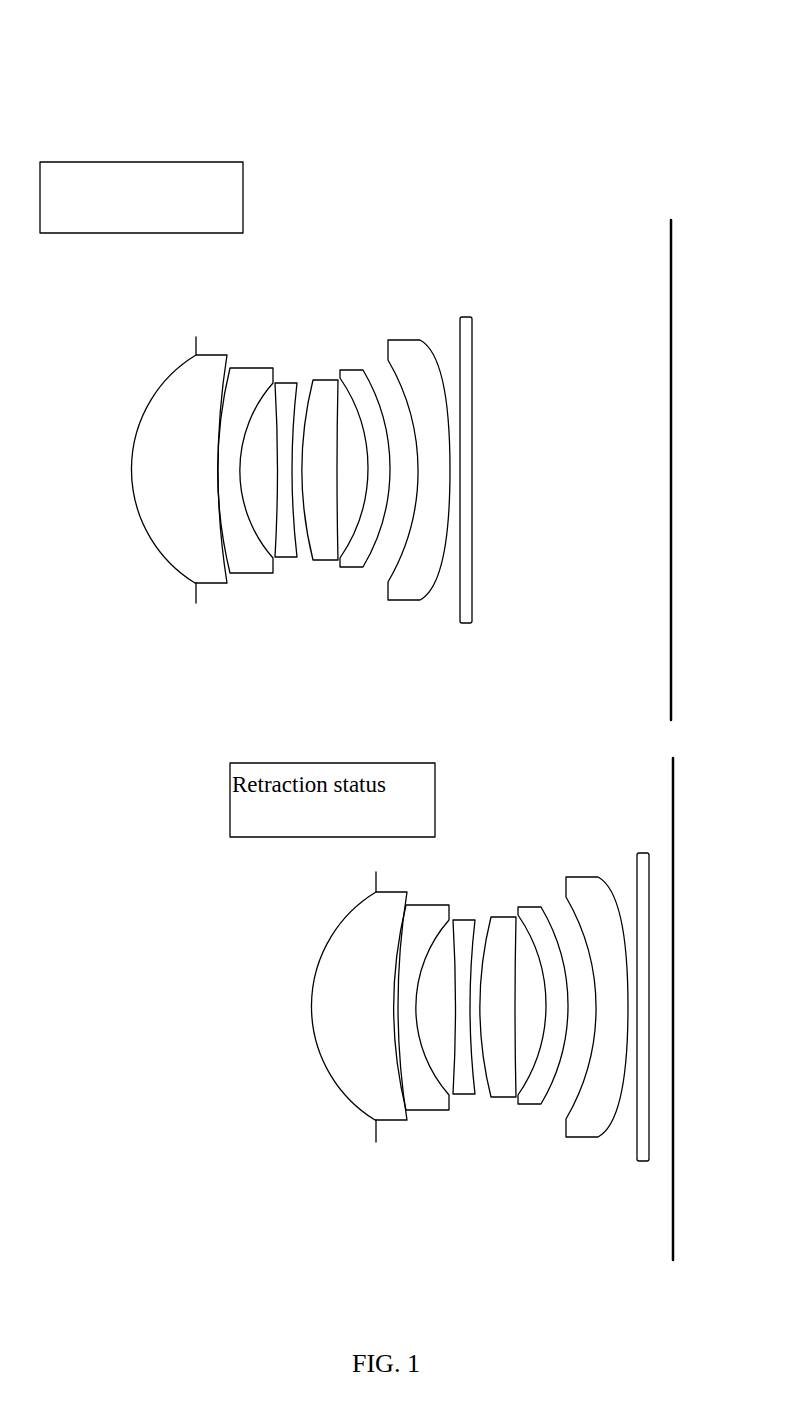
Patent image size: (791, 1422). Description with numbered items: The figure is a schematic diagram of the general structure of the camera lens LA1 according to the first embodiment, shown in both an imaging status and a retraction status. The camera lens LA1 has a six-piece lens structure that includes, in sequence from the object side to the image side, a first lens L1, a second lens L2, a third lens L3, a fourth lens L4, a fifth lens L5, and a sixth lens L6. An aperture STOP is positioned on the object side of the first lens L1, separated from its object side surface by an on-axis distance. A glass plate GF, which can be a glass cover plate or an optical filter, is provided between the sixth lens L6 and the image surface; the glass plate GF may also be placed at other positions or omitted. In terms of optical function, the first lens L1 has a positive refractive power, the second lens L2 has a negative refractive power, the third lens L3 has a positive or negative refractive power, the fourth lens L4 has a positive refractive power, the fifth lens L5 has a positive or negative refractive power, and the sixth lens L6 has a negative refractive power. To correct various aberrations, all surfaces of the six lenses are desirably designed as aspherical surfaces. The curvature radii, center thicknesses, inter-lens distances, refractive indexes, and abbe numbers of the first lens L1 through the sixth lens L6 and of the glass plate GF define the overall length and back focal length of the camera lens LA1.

The camera lens LA1 is at (381, 362).
The first lens L1 is at (179, 456).
The second lens L2 is at (245, 460).
The third lens L3 is at (287, 459).
The fourth lens L4 is at (320, 458).
The fifth lens L5 is at (365, 455).
The sixth lens L6 is at (419, 458).
The glass plate GF is at (466, 455).
The aperture STOP is at (192, 486).